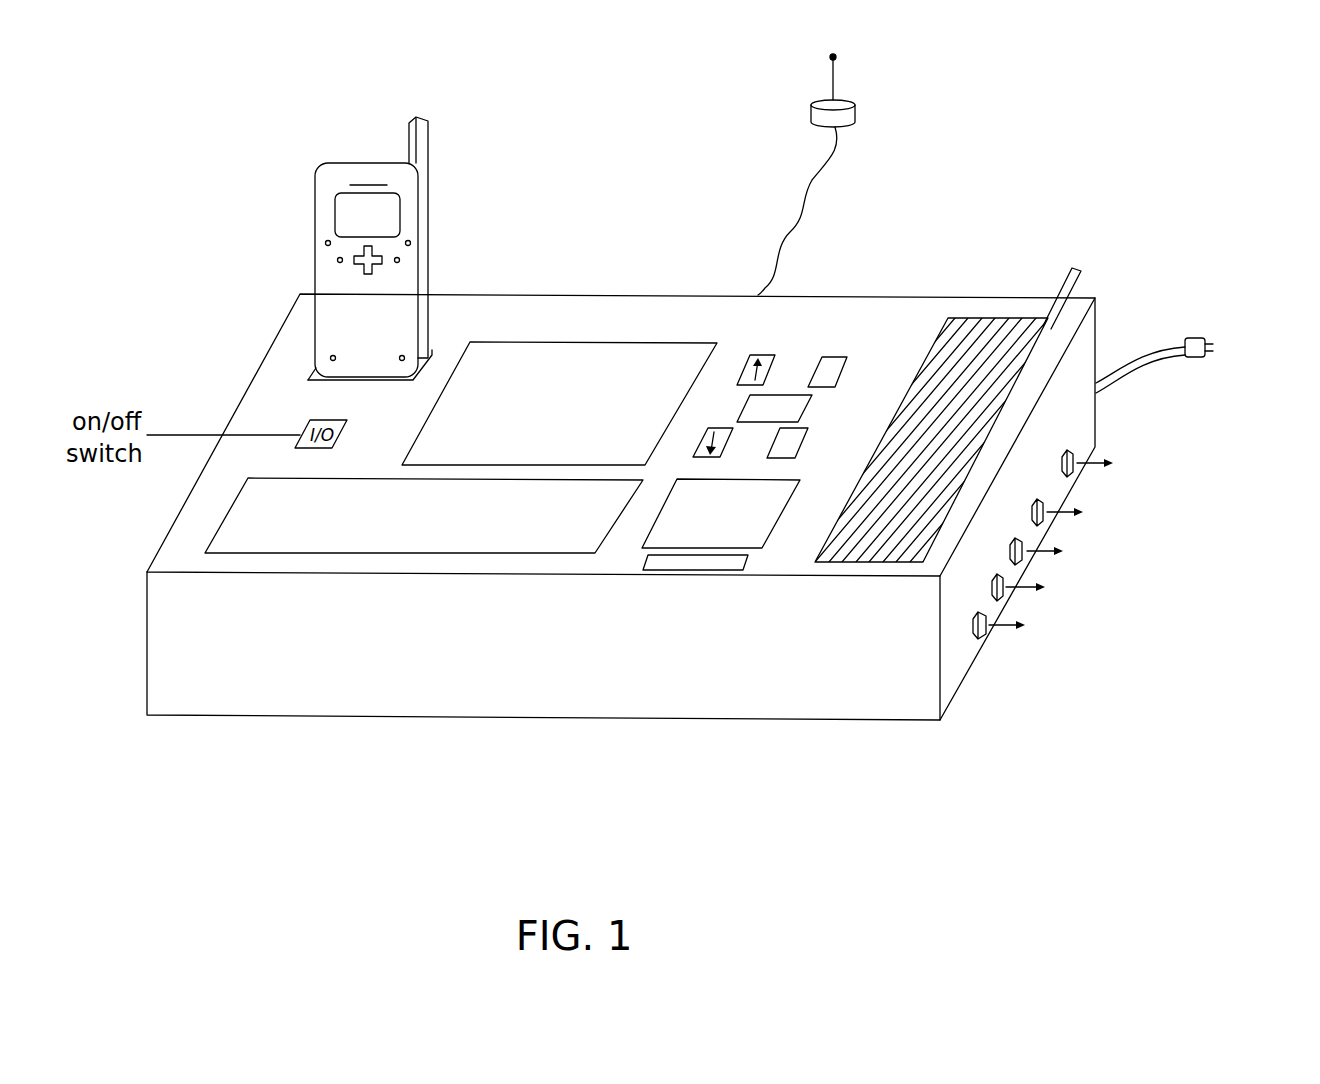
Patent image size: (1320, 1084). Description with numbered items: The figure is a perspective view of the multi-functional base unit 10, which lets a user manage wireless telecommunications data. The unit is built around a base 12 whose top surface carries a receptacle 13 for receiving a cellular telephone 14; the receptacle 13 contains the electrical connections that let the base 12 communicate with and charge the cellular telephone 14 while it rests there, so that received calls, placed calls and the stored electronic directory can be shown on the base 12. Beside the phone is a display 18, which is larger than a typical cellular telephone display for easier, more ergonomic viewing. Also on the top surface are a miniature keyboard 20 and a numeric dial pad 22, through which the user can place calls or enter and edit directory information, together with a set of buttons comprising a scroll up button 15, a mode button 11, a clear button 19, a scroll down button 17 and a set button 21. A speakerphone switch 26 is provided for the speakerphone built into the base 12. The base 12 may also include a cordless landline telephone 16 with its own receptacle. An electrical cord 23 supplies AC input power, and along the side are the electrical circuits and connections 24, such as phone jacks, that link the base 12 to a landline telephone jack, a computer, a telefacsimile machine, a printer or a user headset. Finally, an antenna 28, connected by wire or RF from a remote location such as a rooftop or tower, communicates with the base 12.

The multi-functional base unit 10 is at (260, 824).
The mode button 11 is at (835, 352).
The base 12 is at (441, 698).
The receptacle 13 is at (432, 357).
The cellular telephone 14 is at (425, 213).
The scroll up button 15 is at (763, 348).
The cordless landline telephone 16 is at (988, 319).
The scroll down button 17 is at (703, 440).
The display 18 is at (608, 340).
The clear button 19 is at (810, 407).
The miniature keyboard 20 is at (580, 528).
The set button 21 is at (800, 443).
The numeric dial pad 22 is at (655, 535).
The electrical cord 23 is at (1192, 336).
The electrical circuits and connections 24 is at (1050, 640).
The speakerphone switch 26 is at (692, 571).
The antenna 28 is at (857, 105).